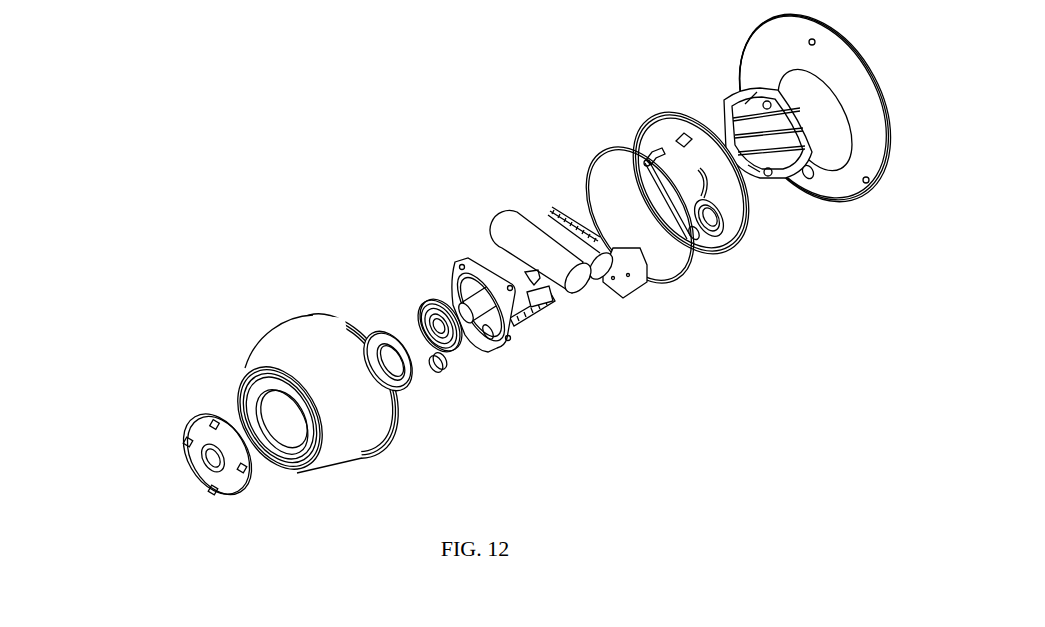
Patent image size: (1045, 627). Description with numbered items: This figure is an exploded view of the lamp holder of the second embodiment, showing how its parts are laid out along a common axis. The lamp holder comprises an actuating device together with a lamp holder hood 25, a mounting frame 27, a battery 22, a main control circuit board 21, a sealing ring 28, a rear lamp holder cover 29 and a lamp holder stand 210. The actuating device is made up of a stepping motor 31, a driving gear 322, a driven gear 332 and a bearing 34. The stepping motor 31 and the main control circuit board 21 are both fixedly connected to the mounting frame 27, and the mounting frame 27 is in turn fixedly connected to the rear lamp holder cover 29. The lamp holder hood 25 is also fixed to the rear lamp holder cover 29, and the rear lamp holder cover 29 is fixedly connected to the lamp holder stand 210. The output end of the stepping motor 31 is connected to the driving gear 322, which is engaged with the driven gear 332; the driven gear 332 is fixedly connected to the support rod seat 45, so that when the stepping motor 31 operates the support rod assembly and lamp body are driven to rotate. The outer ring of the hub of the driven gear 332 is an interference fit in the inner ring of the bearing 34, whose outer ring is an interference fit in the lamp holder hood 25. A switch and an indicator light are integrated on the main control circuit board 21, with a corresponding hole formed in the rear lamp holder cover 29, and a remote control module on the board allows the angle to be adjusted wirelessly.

The main control circuit board 21 is at (602, 250).
The battery 22 is at (550, 225).
The lamp holder hood 25 is at (340, 382).
The mounting frame 27 is at (470, 257).
The sealing ring 28 is at (625, 280).
The rear lamp holder cover 29 is at (683, 165).
The stepping motor 31 is at (518, 247).
The bearing 34 is at (372, 322).
The support rod seat 45 is at (203, 433).
The lamp holder stand 210 is at (745, 100).
The driving gear 322 is at (417, 327).
The driven gear 332 is at (432, 300).